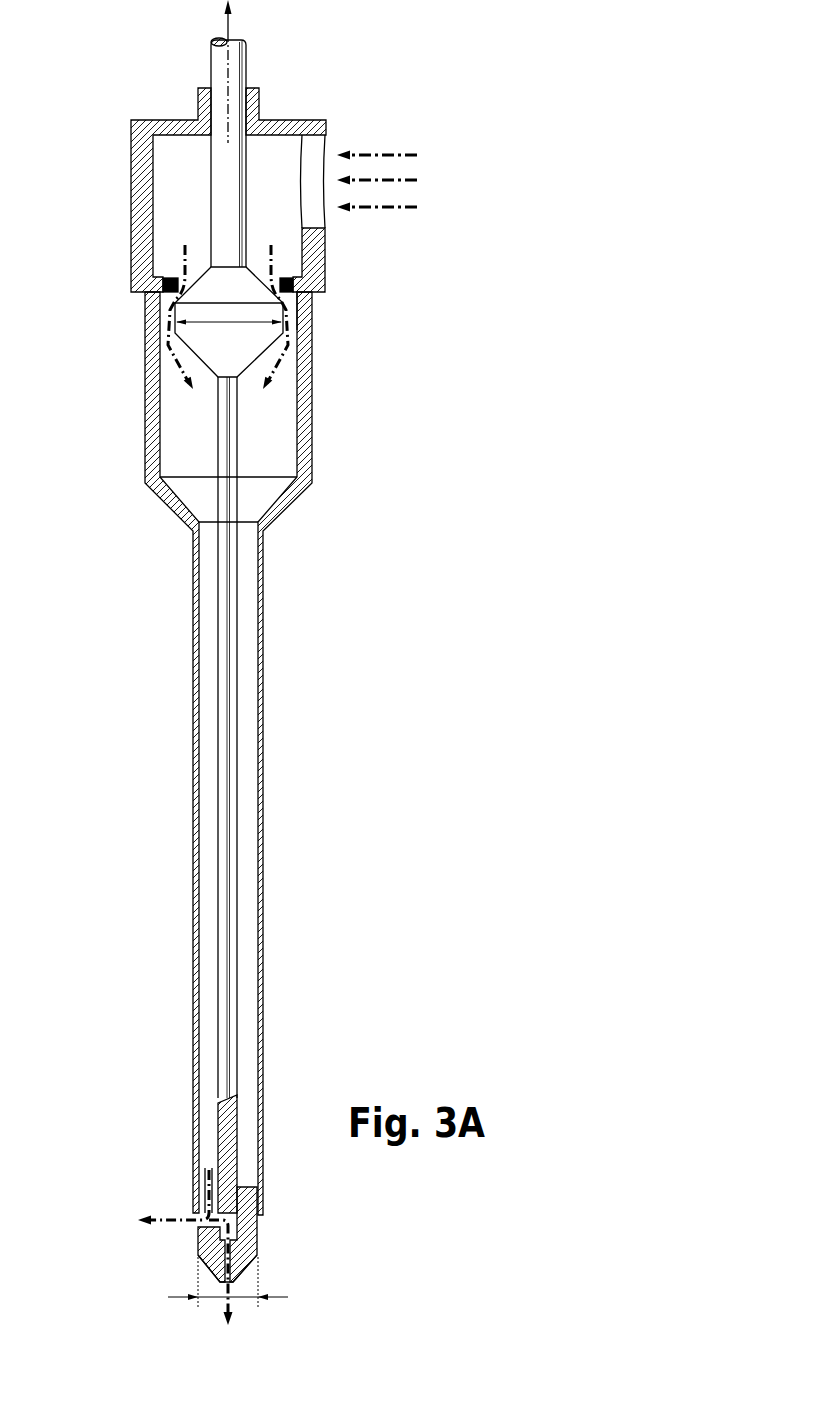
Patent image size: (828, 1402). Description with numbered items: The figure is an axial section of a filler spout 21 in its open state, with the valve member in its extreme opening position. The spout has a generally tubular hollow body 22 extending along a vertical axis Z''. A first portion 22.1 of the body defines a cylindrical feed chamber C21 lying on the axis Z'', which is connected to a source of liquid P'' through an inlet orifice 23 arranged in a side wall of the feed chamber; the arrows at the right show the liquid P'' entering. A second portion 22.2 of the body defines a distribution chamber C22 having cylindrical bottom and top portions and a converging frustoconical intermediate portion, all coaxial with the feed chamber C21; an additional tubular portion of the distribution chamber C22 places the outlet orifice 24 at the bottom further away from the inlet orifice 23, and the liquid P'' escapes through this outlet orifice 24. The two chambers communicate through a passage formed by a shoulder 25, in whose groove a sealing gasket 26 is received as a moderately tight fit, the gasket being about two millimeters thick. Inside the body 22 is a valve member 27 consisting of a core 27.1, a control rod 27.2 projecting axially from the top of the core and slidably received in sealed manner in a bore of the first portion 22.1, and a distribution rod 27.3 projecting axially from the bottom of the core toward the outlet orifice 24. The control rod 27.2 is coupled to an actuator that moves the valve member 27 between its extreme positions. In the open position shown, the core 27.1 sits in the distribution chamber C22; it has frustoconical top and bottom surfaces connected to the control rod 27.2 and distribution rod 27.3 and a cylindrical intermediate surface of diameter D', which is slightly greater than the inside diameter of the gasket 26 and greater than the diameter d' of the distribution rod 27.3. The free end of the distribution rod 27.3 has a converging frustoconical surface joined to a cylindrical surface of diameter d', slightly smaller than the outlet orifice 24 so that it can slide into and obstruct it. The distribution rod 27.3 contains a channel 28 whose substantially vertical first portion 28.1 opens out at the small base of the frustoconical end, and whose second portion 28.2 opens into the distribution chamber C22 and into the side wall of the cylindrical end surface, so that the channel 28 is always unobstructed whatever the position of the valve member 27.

The filler spout 21 is at (450, 106).
The hollow body 22 is at (196, 636).
The first portion of the body 22.1 is at (131, 198).
The second portion of the body 22.2 is at (145, 435).
The inlet orifice 23 is at (318, 145).
The outlet orifice 24 is at (204, 1192).
The shoulder 25 is at (305, 267).
The sealing gasket 26 is at (300, 308).
The valve member 27 is at (170, 625).
The core 27.1 is at (172, 313).
The control rod 27.2 is at (210, 65).
The distribution rod 27.3 is at (220, 910).
The channel 28 is at (222, 1238).
The first portion of the channel 28.1 is at (232, 1270).
The second portion of the channel 28.2 is at (215, 1230).
The feed chamber C21 is at (180, 207).
The distribution chamber C22 is at (191, 432).
The diameter of the cylindrical outside surface of the core D' is at (229, 309).
The diameter of the distribution rod d' is at (220, 1282).
The liquid P'' is at (407, 181).
The vertical axis Z'' is at (259, 71).